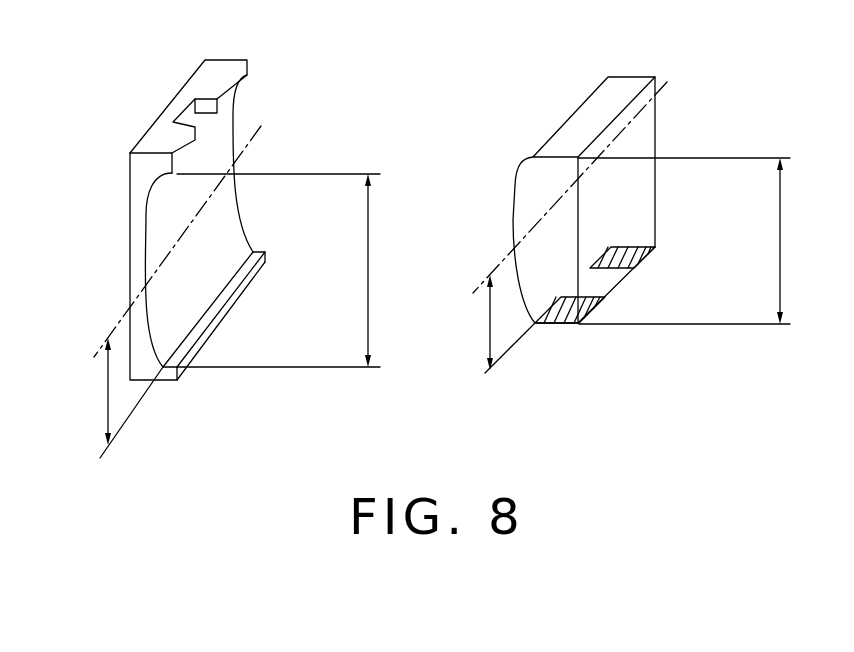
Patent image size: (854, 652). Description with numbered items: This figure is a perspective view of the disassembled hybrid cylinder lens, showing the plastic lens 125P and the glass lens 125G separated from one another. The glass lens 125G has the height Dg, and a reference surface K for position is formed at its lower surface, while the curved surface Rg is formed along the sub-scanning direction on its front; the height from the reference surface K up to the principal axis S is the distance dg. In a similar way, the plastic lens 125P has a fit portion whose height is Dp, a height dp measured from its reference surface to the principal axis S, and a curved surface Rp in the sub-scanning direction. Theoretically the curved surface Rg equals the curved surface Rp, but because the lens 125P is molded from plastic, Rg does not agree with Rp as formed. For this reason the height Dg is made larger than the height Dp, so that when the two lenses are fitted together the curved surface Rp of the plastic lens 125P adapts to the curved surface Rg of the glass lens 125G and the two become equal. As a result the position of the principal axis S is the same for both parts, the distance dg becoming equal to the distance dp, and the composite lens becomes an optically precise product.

The plastic lens 125P is at (174, 114).
The glass lens 125G is at (624, 82).
The principal axis S is at (120, 313).
The curved surface of the plastic lens Rp is at (148, 343).
The curved surface of the glass lens Rg is at (513, 224).
The height of the fit portion Dp is at (278, 270).
The height from the reference surface to the principal axis of the plastic lens dp is at (91, 391).
The height of the glass lens Dg is at (684, 241).
The height from the reference surface to the principal axis of the glass lens dg is at (473, 322).
The reference surface K is at (640, 253).